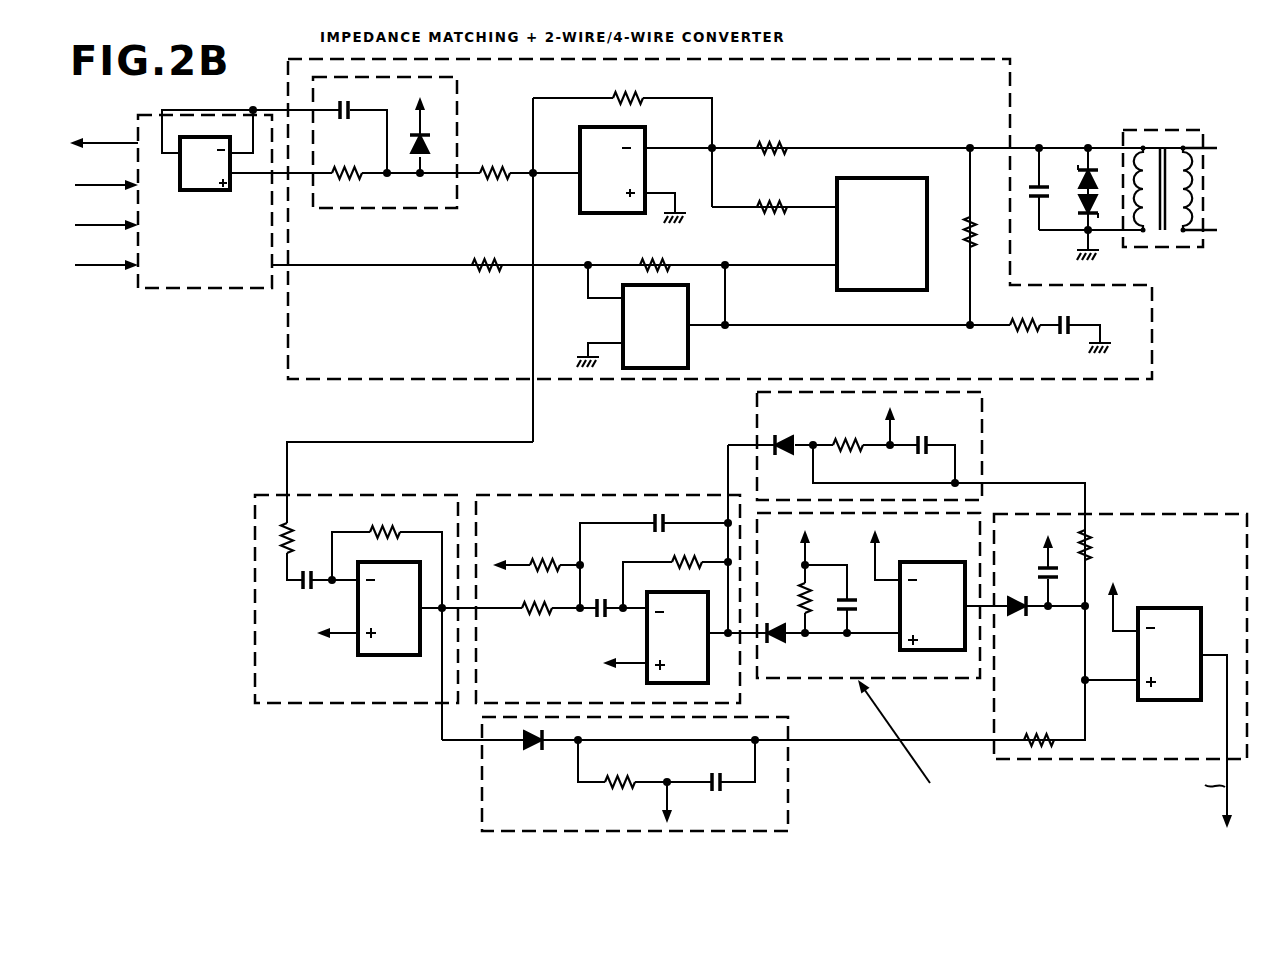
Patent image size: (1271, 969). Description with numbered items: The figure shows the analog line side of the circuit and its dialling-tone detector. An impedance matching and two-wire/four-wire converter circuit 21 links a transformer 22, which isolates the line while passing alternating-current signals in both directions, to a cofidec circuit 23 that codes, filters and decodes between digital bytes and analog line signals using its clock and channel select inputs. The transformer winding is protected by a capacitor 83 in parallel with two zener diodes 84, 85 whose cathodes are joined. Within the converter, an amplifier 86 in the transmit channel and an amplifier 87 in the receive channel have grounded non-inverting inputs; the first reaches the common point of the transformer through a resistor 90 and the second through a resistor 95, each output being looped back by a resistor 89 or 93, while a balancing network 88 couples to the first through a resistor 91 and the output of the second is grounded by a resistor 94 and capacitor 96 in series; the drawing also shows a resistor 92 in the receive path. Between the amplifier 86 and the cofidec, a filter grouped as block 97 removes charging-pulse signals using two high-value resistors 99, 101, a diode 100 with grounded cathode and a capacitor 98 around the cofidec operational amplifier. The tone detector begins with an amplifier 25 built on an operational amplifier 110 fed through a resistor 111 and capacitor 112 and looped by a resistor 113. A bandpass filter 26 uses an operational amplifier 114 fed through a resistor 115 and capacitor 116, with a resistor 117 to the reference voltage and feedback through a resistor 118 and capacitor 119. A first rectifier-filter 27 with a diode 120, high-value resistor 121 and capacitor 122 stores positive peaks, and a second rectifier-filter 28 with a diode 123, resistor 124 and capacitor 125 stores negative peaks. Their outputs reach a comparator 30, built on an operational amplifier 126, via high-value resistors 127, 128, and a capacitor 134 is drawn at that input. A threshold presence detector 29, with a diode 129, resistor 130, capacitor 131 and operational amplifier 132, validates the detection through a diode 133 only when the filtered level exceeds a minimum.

The impedance matching and two-wire/four-wire converter circuit 21 is at (980, 82).
The transformer 22 is at (1160, 135).
The cofidec circuit 23 is at (183, 277).
The amplifier 25 is at (360, 507).
The bandpass filter 26 is at (557, 512).
The first rectifier-filter 27 is at (775, 776).
The second rectifier-filter 28 is at (982, 455).
The threshold presence detector 29 is at (912, 670).
The comparator 30 is at (1150, 522).
The capacitor 83 is at (1027, 186).
The zener diode 84 is at (1080, 225).
The zener diode 85 is at (1092, 155).
The amplifier 86 is at (596, 200).
The amplifier 87 is at (680, 343).
The balancing network 88 is at (903, 257).
The resistor 89 is at (627, 96).
The resistor 90 is at (768, 143).
The resistor 91 is at (770, 213).
The resistor 92 is at (493, 272).
The resistor 93 is at (655, 262).
The resistor 94 is at (1025, 332).
The resistor 95 is at (965, 232).
The capacitor 96 is at (1068, 320).
The protection circuit 97 is at (440, 108).
The capacitor 98 is at (347, 113).
The high-value resistor 99 is at (352, 177).
The diode 100 is at (433, 143).
The high-value resistor 101 is at (495, 178).
The operational amplifier 110 is at (395, 640).
The resistor 111 is at (292, 538).
The capacitor 112 is at (308, 593).
The resistor 113 is at (390, 532).
The operational amplifier 114 is at (695, 678).
The resistor 115 is at (535, 616).
The capacitor 116 is at (602, 617).
The resistor 117 is at (540, 560).
The resistor 118 is at (685, 560).
The capacitor 119 is at (660, 515).
The diode 120 is at (535, 748).
The high-value resistor 121 is at (615, 790).
The capacitor 122 is at (725, 795).
The diode 123 is at (785, 440).
The resistor 124 is at (850, 452).
The capacitor 125 is at (925, 440).
The operational amplifier 126 is at (1165, 700).
The high-value resistor 127 is at (1030, 733).
The high-value resistor 128 is at (1088, 540).
The diode 129 is at (778, 640).
The resistor 130 is at (800, 610).
The capacitor 131 is at (857, 605).
The operational amplifier 132 is at (905, 640).
The diode 133 is at (1017, 612).
The capacitor 134 is at (1038, 574).